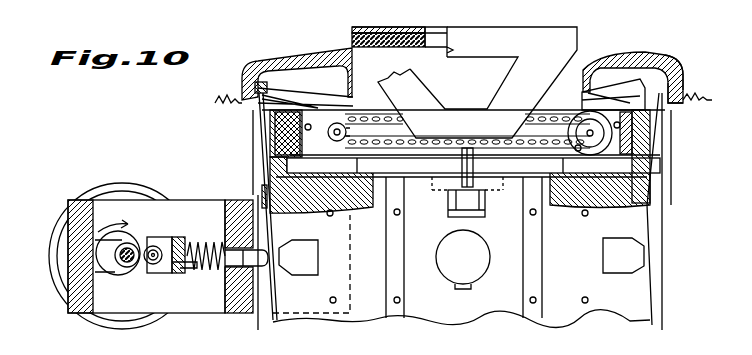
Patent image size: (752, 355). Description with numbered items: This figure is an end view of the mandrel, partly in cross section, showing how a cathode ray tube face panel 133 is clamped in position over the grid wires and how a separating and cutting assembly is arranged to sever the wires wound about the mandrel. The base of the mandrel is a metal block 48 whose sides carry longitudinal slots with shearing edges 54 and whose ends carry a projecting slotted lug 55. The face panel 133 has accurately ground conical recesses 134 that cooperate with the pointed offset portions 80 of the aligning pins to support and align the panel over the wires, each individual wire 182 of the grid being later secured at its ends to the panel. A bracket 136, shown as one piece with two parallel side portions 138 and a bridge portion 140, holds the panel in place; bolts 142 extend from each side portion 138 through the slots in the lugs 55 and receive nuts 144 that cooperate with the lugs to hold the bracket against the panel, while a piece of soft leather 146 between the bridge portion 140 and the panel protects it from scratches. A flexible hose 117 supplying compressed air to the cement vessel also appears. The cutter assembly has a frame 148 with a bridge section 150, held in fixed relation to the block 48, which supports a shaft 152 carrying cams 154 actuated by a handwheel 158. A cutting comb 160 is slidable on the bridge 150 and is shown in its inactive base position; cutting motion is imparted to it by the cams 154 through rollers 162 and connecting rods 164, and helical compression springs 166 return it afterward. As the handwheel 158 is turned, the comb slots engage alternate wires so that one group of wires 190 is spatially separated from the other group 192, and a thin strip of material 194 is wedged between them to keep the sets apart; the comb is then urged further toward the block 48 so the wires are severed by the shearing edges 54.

The metal block 48 is at (613, 313).
The shearing edges 54 is at (644, 259).
The slotted lug 55 is at (490, 189).
The offset portions 80 is at (667, 80).
The flexible hose 117 is at (620, 125).
The face panel 133 is at (627, 57).
The conical recesses 134 is at (677, 65).
The bracket 136 is at (477, 16).
The side portions 138 is at (552, 33).
The bridge portion 140 is at (384, 27).
The bolts 142 is at (462, 187).
The nuts 144 is at (450, 209).
The piece of soft leather 146 is at (352, 41).
The frame 148 is at (80, 233).
The bridge section 150 is at (233, 197).
The shaft 152 is at (132, 261).
The cams 154 is at (115, 274).
The handwheel 158 is at (108, 185).
The cutting comb 160 is at (237, 265).
The rollers 162 is at (153, 247).
The connecting rods 164 is at (188, 252).
The helical compression springs 166 is at (203, 273).
The wire 182 is at (598, 85).
The wires engaged by the shallow slots 190 is at (273, 322).
The wires engaged by the deep slots 192 is at (253, 134).
The thin strip of material 194 is at (257, 192).